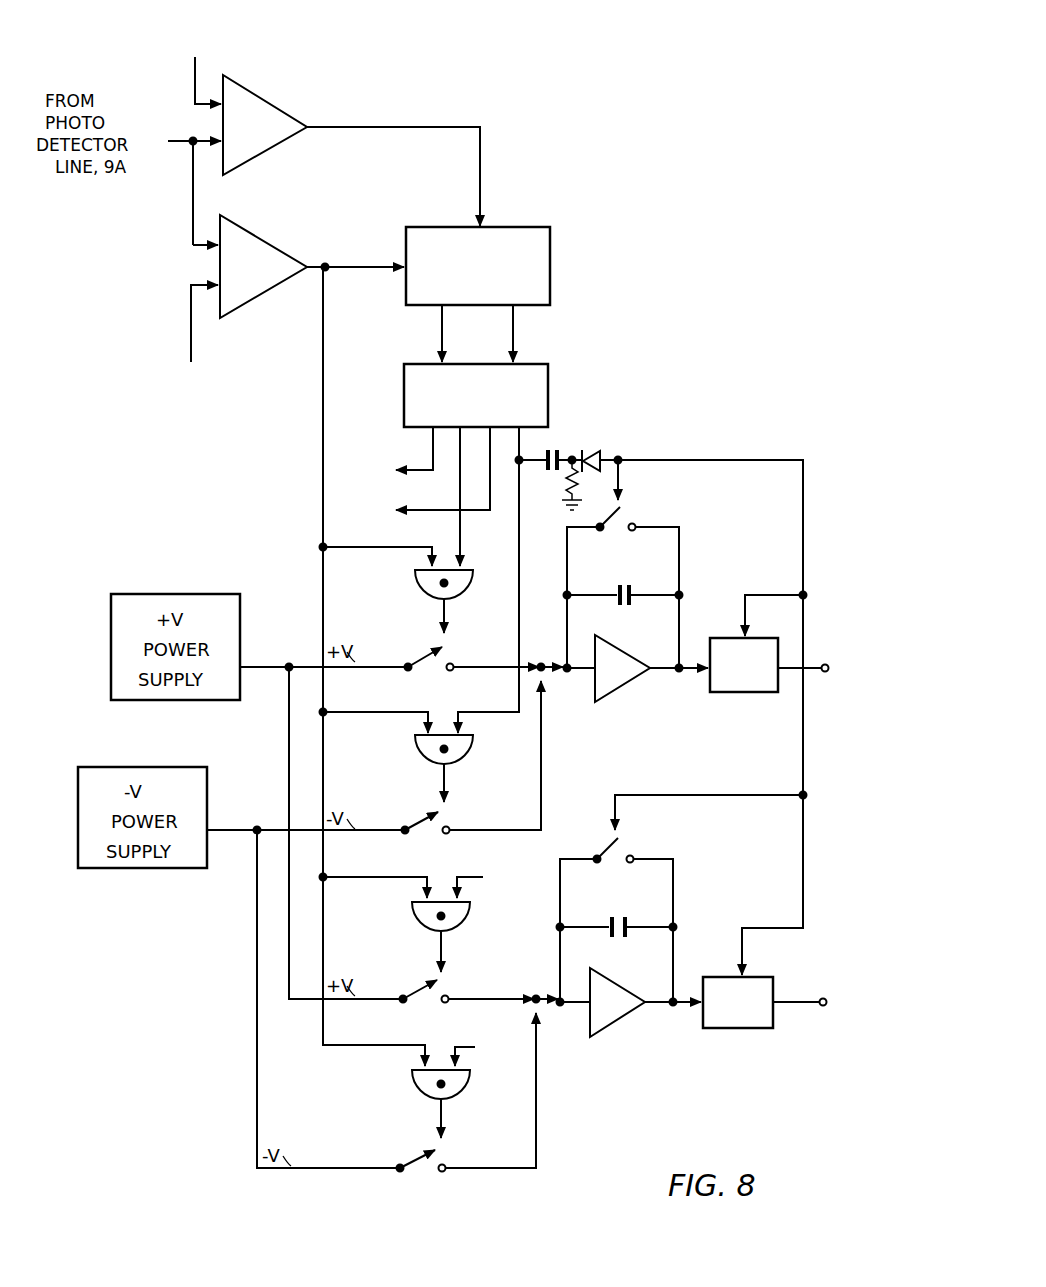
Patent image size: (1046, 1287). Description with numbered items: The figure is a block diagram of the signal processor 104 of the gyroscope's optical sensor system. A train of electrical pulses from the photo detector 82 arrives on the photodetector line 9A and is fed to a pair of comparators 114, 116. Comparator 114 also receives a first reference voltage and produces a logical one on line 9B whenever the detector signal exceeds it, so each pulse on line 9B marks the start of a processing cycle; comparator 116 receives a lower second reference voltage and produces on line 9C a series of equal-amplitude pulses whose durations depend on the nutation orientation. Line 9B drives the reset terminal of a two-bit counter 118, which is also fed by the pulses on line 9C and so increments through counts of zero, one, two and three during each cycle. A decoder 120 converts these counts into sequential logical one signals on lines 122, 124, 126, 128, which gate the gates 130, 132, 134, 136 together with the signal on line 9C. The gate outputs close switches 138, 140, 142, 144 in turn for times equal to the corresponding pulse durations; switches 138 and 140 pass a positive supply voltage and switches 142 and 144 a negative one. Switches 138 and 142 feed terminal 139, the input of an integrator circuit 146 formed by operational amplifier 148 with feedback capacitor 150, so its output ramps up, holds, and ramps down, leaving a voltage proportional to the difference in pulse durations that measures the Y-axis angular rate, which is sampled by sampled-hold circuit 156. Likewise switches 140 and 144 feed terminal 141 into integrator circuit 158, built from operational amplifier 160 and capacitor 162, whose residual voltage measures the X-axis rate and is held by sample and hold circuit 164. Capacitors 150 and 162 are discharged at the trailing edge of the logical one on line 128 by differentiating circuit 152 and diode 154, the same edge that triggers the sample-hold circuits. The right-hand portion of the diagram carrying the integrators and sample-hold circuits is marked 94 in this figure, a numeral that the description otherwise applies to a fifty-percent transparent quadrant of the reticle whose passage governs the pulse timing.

The photo detector 82 is at (167, 143).
The photodetector signal line 9A is at (187, 147).
The line 9B is at (370, 127).
The line 9C is at (362, 258).
The comparator 114 is at (278, 78).
The comparator 116 is at (278, 216).
The two-bit counter 118 is at (540, 257).
The decoder 120 is at (541, 392).
The processor 104 is at (607, 311).
The 50% transparent quadrant 94 is at (827, 486).
The line 122 is at (402, 465).
The line 124 is at (457, 447).
The line 126 is at (475, 1047).
The line 128 is at (556, 430).
The differentiating circuit 152 is at (578, 432).
The diode 154 is at (598, 458).
The integrator circuit 158 is at (602, 619).
The capacitor 162 is at (622, 586).
The operational amplifier 160 is at (606, 660).
The sample and hold circuit 164 is at (730, 694).
The terminal 141 is at (541, 665).
The gate 132 is at (428, 585).
The switch 140 is at (433, 666).
The gate 136 is at (472, 746).
The switch 144 is at (428, 832).
The gate 130 is at (470, 915).
The switch 138 is at (428, 1000).
The terminal 139 is at (536, 998).
The gate 134 is at (468, 1083).
The switch 142 is at (424, 1172).
The capacitor 150 is at (622, 916).
The integrator circuit 146 is at (654, 968).
The operational amplifier 148 is at (606, 1017).
The sampled-hold circuit 156 is at (730, 1030).